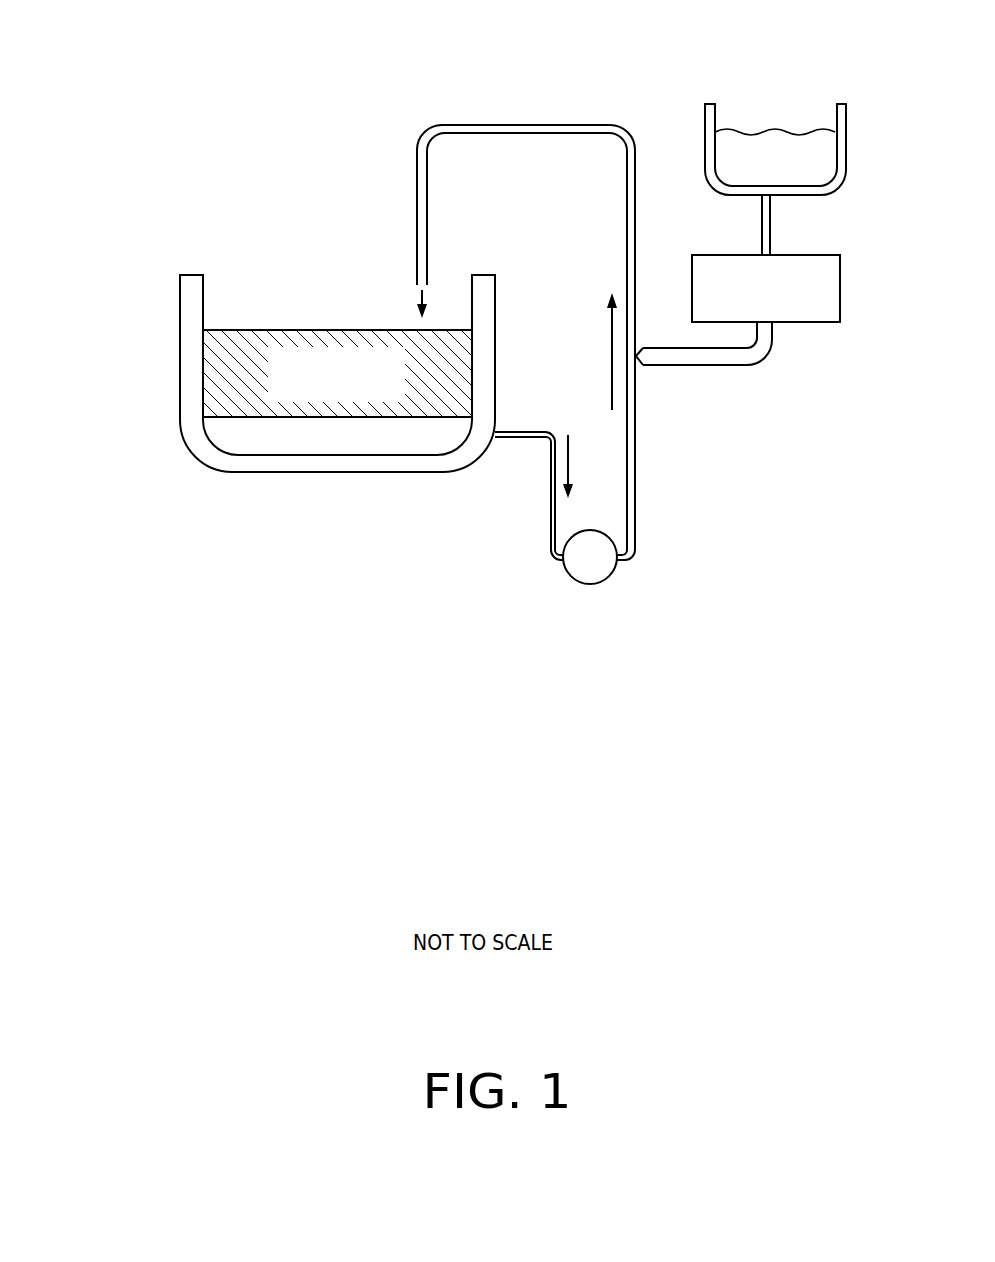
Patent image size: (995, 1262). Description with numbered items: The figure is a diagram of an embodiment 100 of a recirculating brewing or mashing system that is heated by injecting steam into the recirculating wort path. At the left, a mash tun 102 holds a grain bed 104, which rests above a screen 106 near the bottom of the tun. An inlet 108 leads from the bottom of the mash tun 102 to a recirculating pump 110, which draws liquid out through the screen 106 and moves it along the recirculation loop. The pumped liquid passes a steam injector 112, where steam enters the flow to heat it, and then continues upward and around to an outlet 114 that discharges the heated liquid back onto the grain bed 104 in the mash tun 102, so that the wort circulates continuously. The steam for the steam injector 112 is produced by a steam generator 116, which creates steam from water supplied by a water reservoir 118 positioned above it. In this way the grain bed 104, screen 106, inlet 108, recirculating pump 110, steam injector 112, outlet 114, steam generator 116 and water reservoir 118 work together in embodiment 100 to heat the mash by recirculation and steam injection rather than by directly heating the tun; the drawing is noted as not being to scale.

The embodiment 100 is at (312, 720).
The mash tun 102 is at (180, 362).
The grain bed 104 is at (354, 398).
The screen 106 is at (240, 418).
The inlet 108 is at (520, 437).
The recirculating pump 110 is at (610, 578).
The steam injector 112 is at (645, 367).
The outlet 114 is at (408, 245).
The steam generator 116 is at (820, 322).
The water reservoir 118 is at (705, 158).